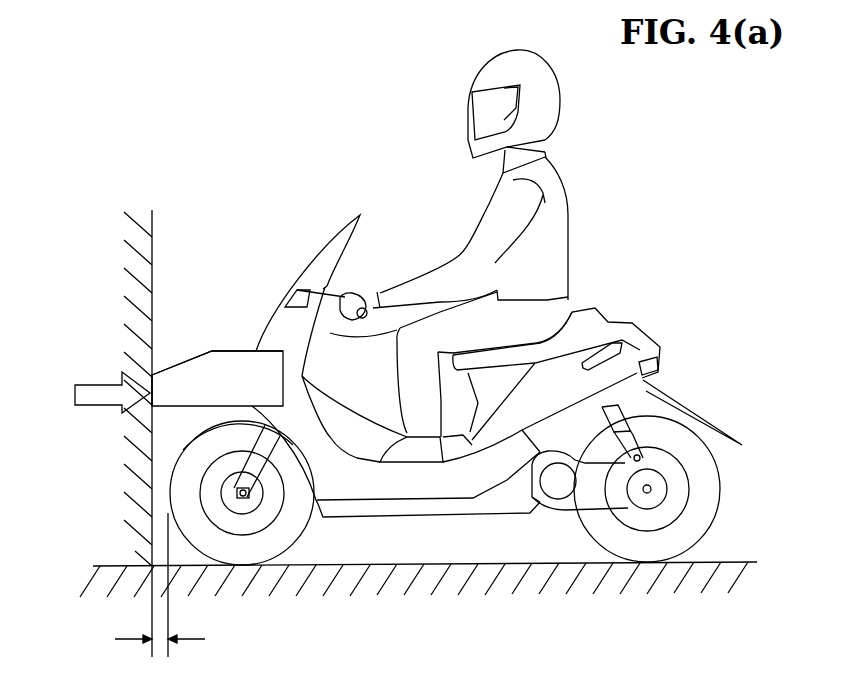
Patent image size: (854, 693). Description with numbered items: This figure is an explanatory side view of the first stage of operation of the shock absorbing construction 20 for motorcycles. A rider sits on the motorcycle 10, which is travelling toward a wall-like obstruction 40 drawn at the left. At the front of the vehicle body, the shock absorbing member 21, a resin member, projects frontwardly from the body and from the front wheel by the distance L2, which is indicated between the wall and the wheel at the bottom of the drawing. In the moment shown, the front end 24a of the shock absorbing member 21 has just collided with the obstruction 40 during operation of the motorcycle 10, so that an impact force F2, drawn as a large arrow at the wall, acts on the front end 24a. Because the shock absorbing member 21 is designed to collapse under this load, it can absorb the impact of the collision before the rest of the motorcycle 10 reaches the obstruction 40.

The motorcycle 10 is at (331, 221).
The shock absorbing device 20 is at (254, 331).
The shock absorbing member 21 is at (221, 333).
The front end 24a is at (150, 402).
The obstruction 40 is at (128, 276).
The impact force F2 is at (110, 382).
The distance L2 is at (160, 603).